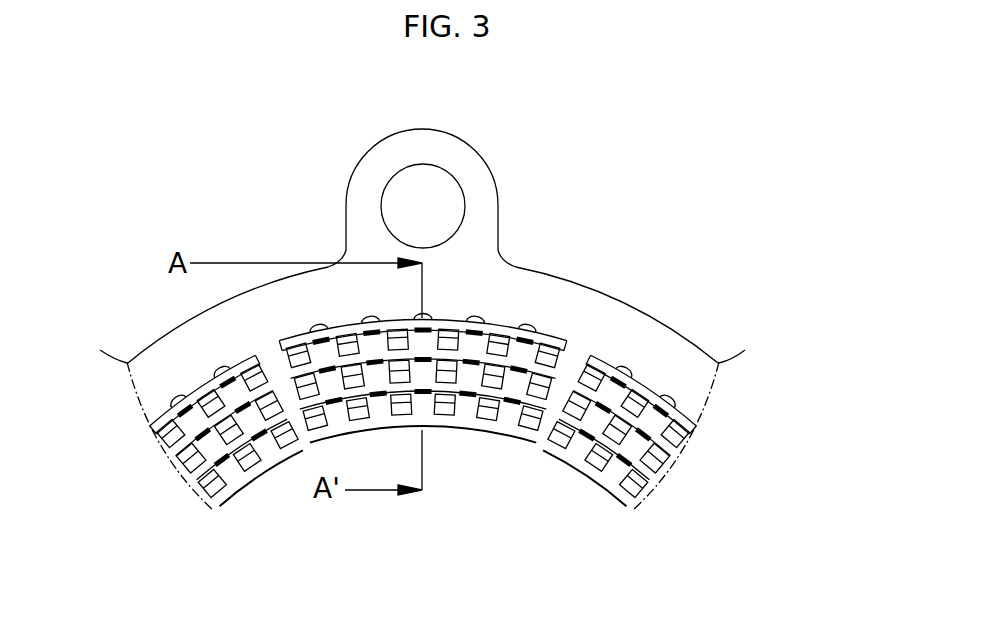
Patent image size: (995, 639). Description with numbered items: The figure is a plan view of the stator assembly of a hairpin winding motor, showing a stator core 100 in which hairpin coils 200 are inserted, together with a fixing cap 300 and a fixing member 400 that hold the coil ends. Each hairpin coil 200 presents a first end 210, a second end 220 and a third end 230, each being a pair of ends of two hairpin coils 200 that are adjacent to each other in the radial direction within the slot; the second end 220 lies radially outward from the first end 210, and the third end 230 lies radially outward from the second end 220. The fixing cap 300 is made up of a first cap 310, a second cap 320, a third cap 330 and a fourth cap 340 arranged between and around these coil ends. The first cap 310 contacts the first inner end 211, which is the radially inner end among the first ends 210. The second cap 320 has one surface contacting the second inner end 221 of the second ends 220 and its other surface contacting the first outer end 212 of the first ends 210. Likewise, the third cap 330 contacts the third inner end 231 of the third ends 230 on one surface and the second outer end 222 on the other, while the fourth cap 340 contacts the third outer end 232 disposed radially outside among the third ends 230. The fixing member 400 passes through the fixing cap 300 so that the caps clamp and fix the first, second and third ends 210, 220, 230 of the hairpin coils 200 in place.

The stator core 100 is at (175, 340).
The hairpin coil 200 is at (814, 248).
The first end 210 is at (518, 376).
The first inner end 211 is at (688, 385).
The first outer end 212 is at (643, 380).
The second end 220 is at (450, 330).
The second inner end 221 is at (602, 397).
The second outer end 222 is at (590, 365).
The third end 230 is at (423, 293).
The third inner end 231 is at (575, 373).
The third outer end 232 is at (538, 357).
The fixing cap 300 is at (422, 474).
The first cap 310 is at (407, 557).
The second cap 320 is at (508, 400).
The third cap 330 is at (490, 370).
The fourth cap 340 is at (440, 336).
The fixing member 400 is at (685, 400).